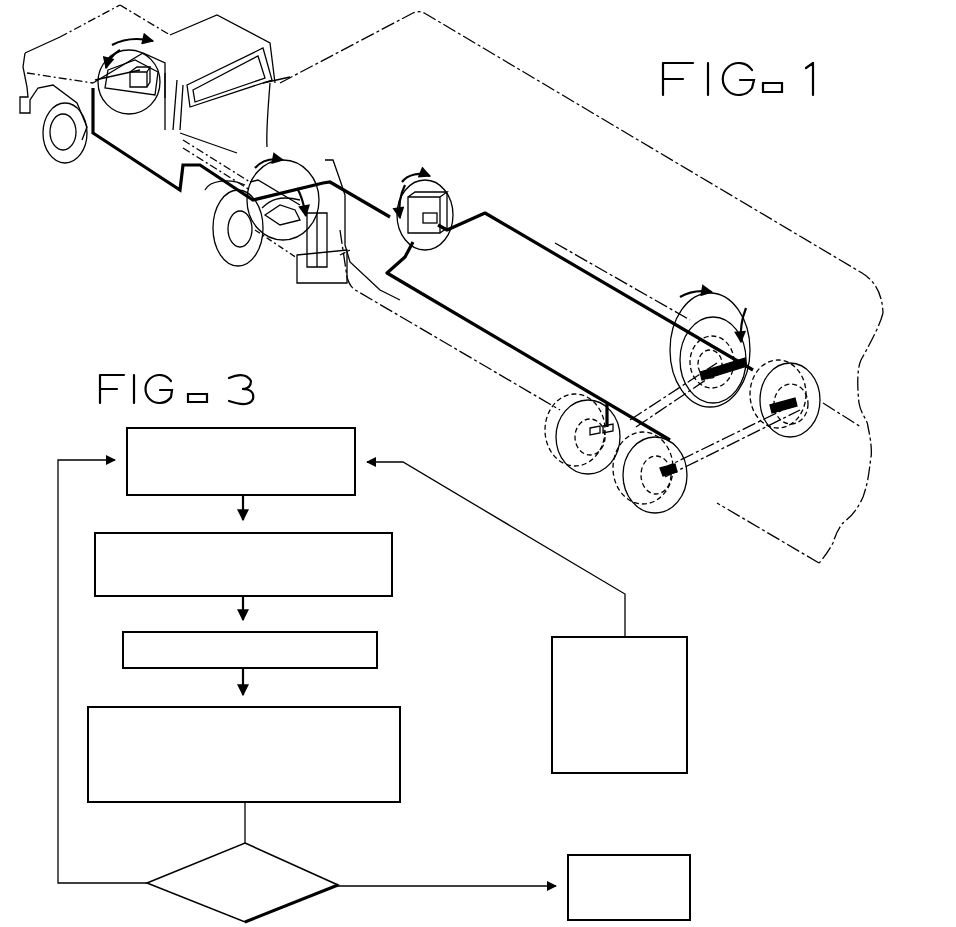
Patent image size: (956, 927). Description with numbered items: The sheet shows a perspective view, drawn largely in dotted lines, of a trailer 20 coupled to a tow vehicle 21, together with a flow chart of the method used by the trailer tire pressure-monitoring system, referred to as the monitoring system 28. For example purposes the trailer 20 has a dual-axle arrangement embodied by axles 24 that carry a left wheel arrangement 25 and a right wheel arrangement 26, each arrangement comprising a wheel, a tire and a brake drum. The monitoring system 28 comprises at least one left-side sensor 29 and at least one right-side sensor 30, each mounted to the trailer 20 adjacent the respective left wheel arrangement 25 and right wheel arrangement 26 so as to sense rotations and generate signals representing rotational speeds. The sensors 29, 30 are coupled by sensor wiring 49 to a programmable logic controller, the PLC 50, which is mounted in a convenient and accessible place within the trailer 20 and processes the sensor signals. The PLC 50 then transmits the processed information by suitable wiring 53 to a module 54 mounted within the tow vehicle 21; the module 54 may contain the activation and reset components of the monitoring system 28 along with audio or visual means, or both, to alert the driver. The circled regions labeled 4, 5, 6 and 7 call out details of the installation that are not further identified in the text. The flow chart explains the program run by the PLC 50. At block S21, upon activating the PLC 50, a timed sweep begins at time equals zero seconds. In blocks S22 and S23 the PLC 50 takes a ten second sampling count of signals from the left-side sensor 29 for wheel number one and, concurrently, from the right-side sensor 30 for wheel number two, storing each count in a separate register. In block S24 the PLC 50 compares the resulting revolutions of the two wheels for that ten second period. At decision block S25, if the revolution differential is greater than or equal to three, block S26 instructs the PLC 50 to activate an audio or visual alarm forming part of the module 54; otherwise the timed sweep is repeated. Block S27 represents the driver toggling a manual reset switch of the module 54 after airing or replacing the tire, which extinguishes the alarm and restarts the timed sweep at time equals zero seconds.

In FIG. 1, the trailer 20 is at (692, 176).
In FIG. 1, the tow vehicle 21 is at (256, 24).
In FIG. 1, the wheel rotation sensor on trailer wheel 4 is at (710, 343).
In FIG. 1, the display/indicator unit in cab 5 is at (127, 69).
In FIG. 1, the connector at hitch 6 is at (283, 199).
In FIG. 1, the controller unit on trailer 7 is at (424, 210).
In FIG. 1, the axles 24 is at (653, 387).
In FIG. 1, the left wheel arrangement 25 is at (545, 420).
In FIG. 1, the right wheel arrangement 26 is at (745, 323).
In FIG. 1, the monitoring system 28 is at (296, 317).
In FIG. 1, the left-side sensor 29 is at (562, 443).
In FIG. 1, the right-side sensor 30 is at (662, 342).
In FIG. 1, the sensor wiring 49 is at (580, 273).
In FIG. 1, the PLC 50 is at (433, 230).
In FIG. 1, the wiring 53 is at (140, 174).
In FIG. 1, the module 54 is at (165, 65).
In FIG. 3, the start block S21 is at (355, 483).
In FIG. 3, the wheel revolution counting block S22 is at (392, 558).
In FIG. 3, the ten second block S23 is at (377, 645).
In FIG. 3, the comparison block S24 is at (400, 737).
In FIG. 3, the revolution differential decision block S25 is at (290, 907).
In FIG. 3, the activate alarm block S26 is at (690, 876).
In FIG. 3, the re-start block S27 is at (687, 690).